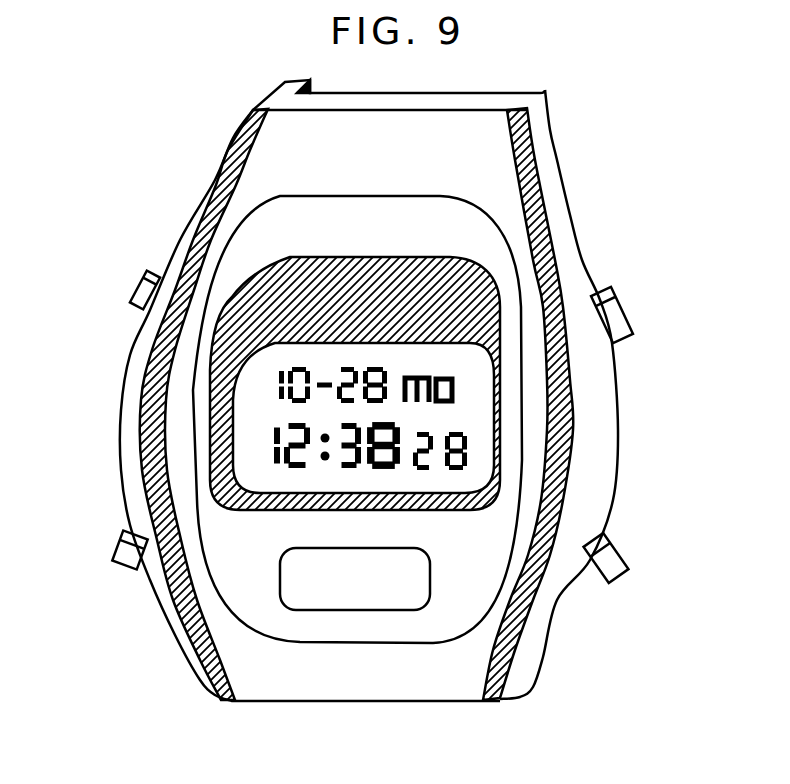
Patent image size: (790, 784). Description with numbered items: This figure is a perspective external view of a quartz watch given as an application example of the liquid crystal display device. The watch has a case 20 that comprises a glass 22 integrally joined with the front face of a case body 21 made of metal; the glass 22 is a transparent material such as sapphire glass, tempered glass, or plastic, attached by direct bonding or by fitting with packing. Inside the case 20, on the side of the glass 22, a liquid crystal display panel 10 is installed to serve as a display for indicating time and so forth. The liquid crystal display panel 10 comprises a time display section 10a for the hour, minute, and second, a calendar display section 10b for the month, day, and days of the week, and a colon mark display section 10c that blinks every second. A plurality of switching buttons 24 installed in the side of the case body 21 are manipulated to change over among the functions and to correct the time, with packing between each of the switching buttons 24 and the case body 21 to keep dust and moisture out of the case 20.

The liquid crystal display panel 10 is at (250, 398).
The time display section 10a is at (371, 477).
The calendar display section 10b is at (394, 366).
The colon mark display section 10c is at (322, 468).
The case 20 is at (188, 186).
The case body 21 is at (607, 427).
The glass 22 is at (480, 228).
The switching buttons 24 is at (143, 284).